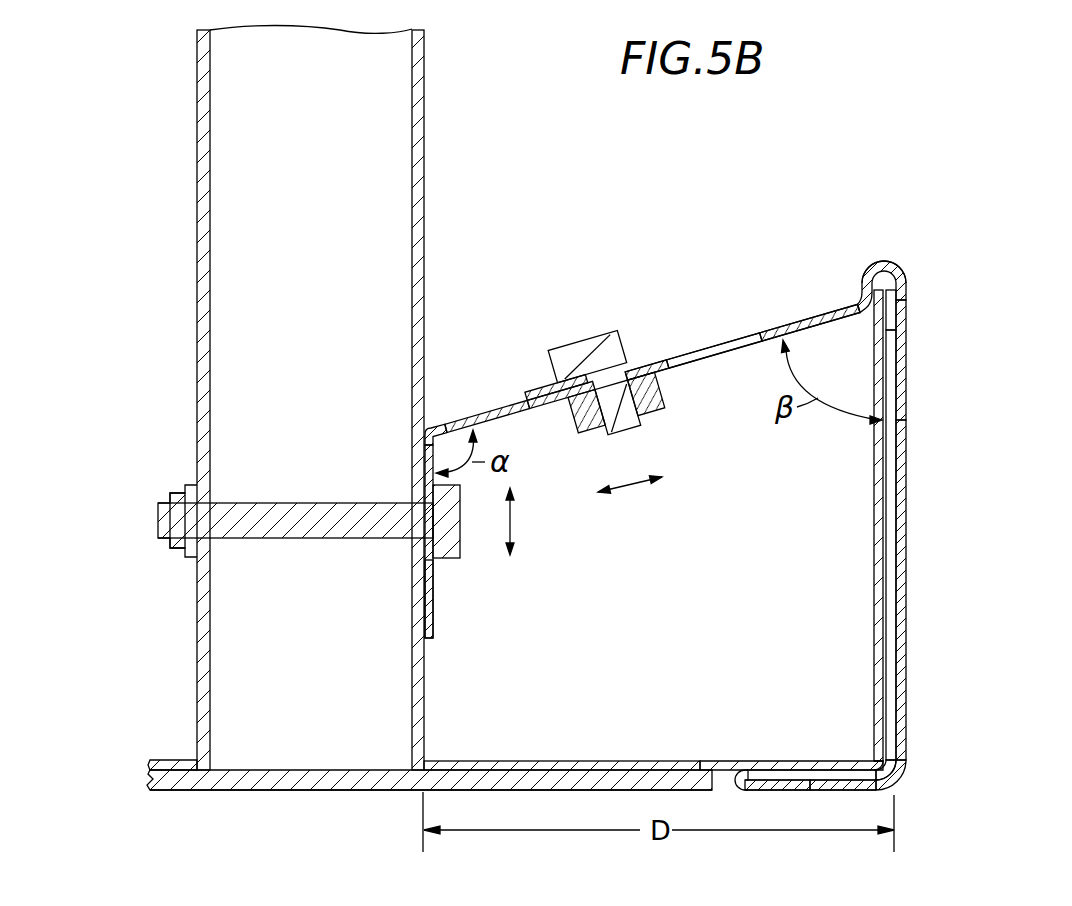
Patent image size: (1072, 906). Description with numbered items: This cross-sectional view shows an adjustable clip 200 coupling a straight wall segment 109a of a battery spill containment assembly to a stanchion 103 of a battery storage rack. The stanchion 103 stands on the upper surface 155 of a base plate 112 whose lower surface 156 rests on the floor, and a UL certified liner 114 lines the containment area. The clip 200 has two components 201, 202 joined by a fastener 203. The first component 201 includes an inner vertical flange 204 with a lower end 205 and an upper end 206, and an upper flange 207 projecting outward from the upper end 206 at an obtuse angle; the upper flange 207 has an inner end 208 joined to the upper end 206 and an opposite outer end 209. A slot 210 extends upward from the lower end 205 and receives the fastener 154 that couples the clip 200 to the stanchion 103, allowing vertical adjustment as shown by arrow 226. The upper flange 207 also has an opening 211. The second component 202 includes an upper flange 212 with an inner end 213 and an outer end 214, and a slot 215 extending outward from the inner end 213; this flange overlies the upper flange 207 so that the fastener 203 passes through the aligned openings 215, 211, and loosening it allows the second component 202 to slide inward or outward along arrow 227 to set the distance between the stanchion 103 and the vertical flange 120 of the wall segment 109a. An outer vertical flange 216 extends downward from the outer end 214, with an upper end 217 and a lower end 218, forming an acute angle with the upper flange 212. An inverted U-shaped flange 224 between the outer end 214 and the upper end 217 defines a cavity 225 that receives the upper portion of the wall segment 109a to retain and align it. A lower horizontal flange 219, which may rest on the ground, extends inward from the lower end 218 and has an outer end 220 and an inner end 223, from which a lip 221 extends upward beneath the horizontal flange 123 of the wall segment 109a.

The stanchion 103 is at (424, 129).
The base plate 112 is at (437, 781).
The lower surface 156 is at (500, 790).
The upper surface 155 is at (450, 760).
The UL certified liner 114 is at (560, 762).
The horizontal flange 123 is at (810, 768).
The straight wall segment 109a is at (884, 388).
The fastener 154 is at (253, 520).
The lower end 205 is at (436, 640).
The adjustable clip 200 is at (908, 175).
The inner end 208 is at (441, 411).
The upper end 206 is at (430, 432).
The inner vertical flange 204 is at (423, 447).
The aperture 210 is at (436, 598).
The upper flange 207 is at (504, 404).
The first component 201 is at (475, 385).
The opening 215 is at (712, 345).
The upper flange 212 is at (773, 340).
The inverted U-shaped flange 224 is at (877, 252).
The second component 202 is at (930, 245).
The upper end 217 is at (907, 290).
The outer vertical flange 216 is at (907, 560).
The cavity 225 is at (884, 283).
The outer end 214 is at (897, 342).
The vertical flange 120 is at (897, 700).
The lower end 218 is at (906, 752).
The outer end 220 is at (893, 790).
The lip 221 is at (733, 780).
The inner end 223 is at (753, 782).
The lower horizontal flange 219 is at (833, 792).
The inner end 213 is at (522, 395).
The fastener 203 is at (608, 335).
The opening 211 is at (560, 410).
The outer end 209 is at (668, 372).
The vertical adjustment arrow 226 is at (512, 520).
The sliding arrow 227 is at (632, 485).